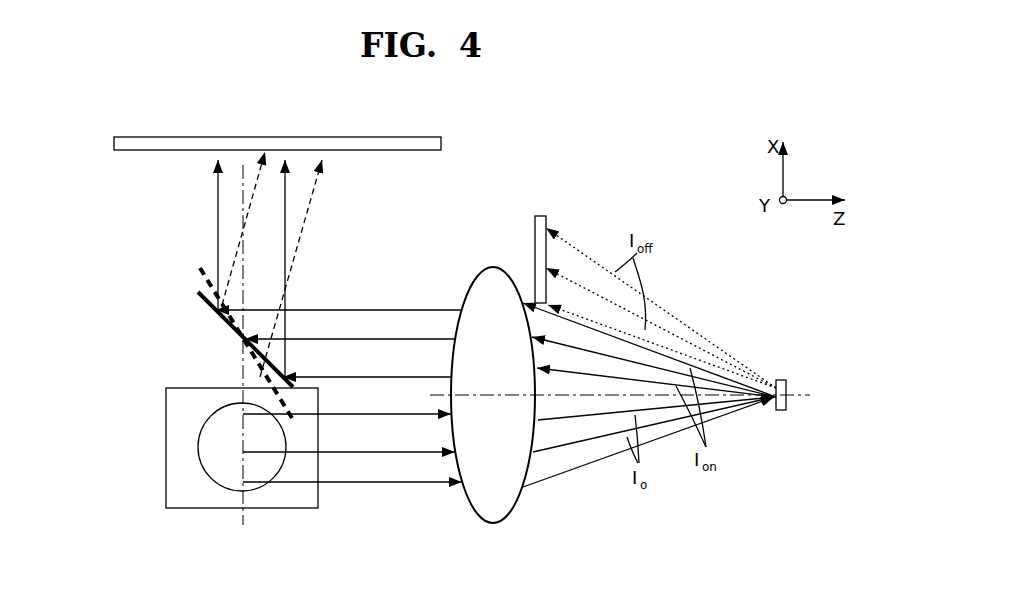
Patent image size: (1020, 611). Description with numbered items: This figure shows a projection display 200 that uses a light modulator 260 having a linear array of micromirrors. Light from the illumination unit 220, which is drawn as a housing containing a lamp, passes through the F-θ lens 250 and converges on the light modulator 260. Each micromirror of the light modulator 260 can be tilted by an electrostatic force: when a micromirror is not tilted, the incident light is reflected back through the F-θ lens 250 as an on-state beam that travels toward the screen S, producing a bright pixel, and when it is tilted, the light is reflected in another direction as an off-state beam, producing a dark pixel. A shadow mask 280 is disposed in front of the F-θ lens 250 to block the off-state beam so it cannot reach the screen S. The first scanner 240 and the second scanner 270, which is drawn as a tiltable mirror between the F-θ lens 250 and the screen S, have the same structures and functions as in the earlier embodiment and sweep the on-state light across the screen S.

The projection display 200 is at (612, 168).
The illumination unit 220 is at (290, 509).
The first scanner 240 is at (198, 447).
The F-θ lens 250 is at (500, 502).
The light modulator 260 is at (781, 380).
The second scanner 270 is at (212, 307).
The shadow mask 280 is at (540, 216).
The screen S is at (441, 143).